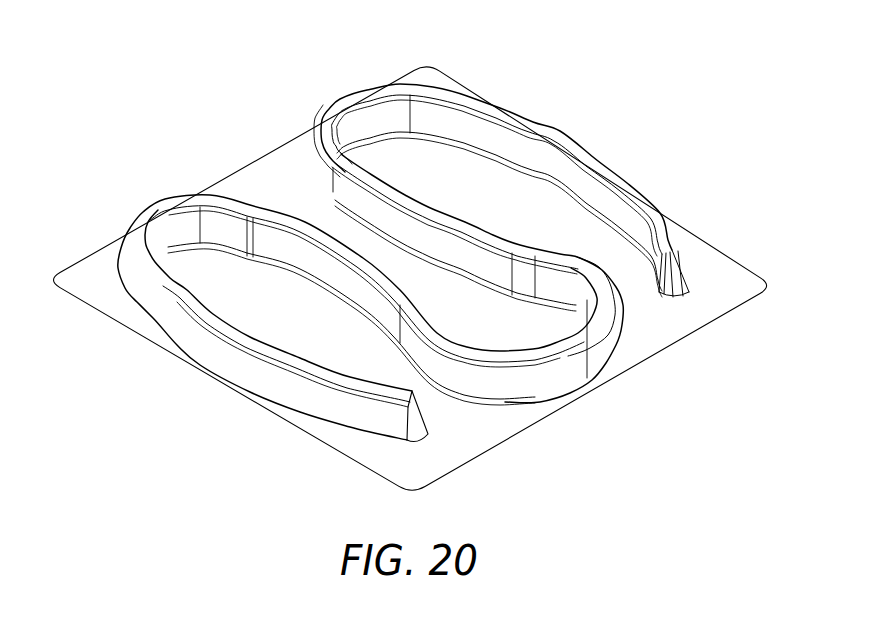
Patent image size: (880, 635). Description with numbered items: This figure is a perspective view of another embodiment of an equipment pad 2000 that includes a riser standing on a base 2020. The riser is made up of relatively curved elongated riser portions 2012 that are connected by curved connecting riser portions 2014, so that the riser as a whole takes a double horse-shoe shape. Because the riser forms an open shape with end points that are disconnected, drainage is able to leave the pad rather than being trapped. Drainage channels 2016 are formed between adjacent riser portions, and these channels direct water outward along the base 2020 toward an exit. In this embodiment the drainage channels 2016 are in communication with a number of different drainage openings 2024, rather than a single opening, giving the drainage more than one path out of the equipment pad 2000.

The tray assembly 2000 is at (404, 259).
The curved elongated riser portions 2012 is at (577, 148).
The curved connecting riser portions 2014 is at (335, 103).
The drainage channels 2016 is at (453, 168).
The base plate 2020 is at (703, 250).
The drainage openings 2024 is at (637, 297).